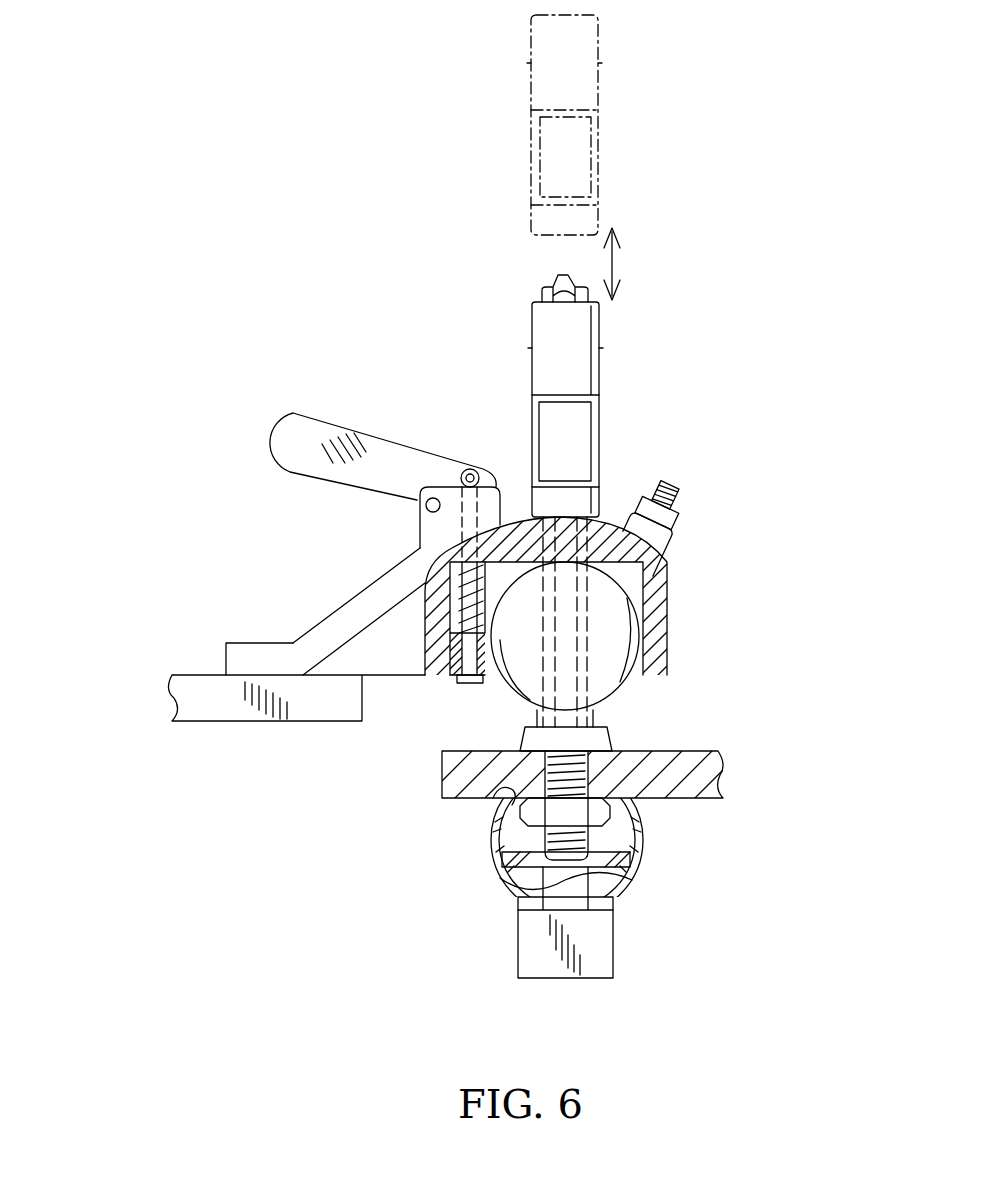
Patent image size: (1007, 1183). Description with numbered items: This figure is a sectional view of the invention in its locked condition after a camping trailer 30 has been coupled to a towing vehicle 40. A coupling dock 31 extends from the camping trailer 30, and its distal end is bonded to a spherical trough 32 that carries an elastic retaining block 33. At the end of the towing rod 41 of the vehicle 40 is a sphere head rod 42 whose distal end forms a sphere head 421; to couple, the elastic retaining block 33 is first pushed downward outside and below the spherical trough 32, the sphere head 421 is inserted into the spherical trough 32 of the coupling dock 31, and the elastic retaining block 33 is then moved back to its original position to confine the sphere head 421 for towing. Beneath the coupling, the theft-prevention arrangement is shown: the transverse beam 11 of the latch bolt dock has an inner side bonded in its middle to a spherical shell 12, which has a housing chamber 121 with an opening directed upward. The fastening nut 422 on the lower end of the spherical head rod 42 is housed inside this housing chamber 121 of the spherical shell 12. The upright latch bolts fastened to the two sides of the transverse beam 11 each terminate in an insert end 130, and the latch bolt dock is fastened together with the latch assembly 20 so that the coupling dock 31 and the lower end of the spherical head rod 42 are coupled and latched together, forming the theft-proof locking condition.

The transverse beam 11 is at (530, 948).
The spherical shell 12 is at (497, 871).
The housing chamber 121 is at (513, 800).
The insert end 130 is at (545, 292).
The latch assembly 20 is at (510, 388).
The camping trailer 30 is at (130, 688).
The coupling dock 31 is at (255, 665).
The spherical trough 32 is at (627, 577).
The elastic retaining block 33 is at (452, 672).
The vehicle 40 is at (745, 752).
The towing rod 41 is at (703, 793).
The sphere head rod 42 is at (595, 715).
The sphere head 421 is at (618, 680).
The fastening nut 422 is at (603, 815).